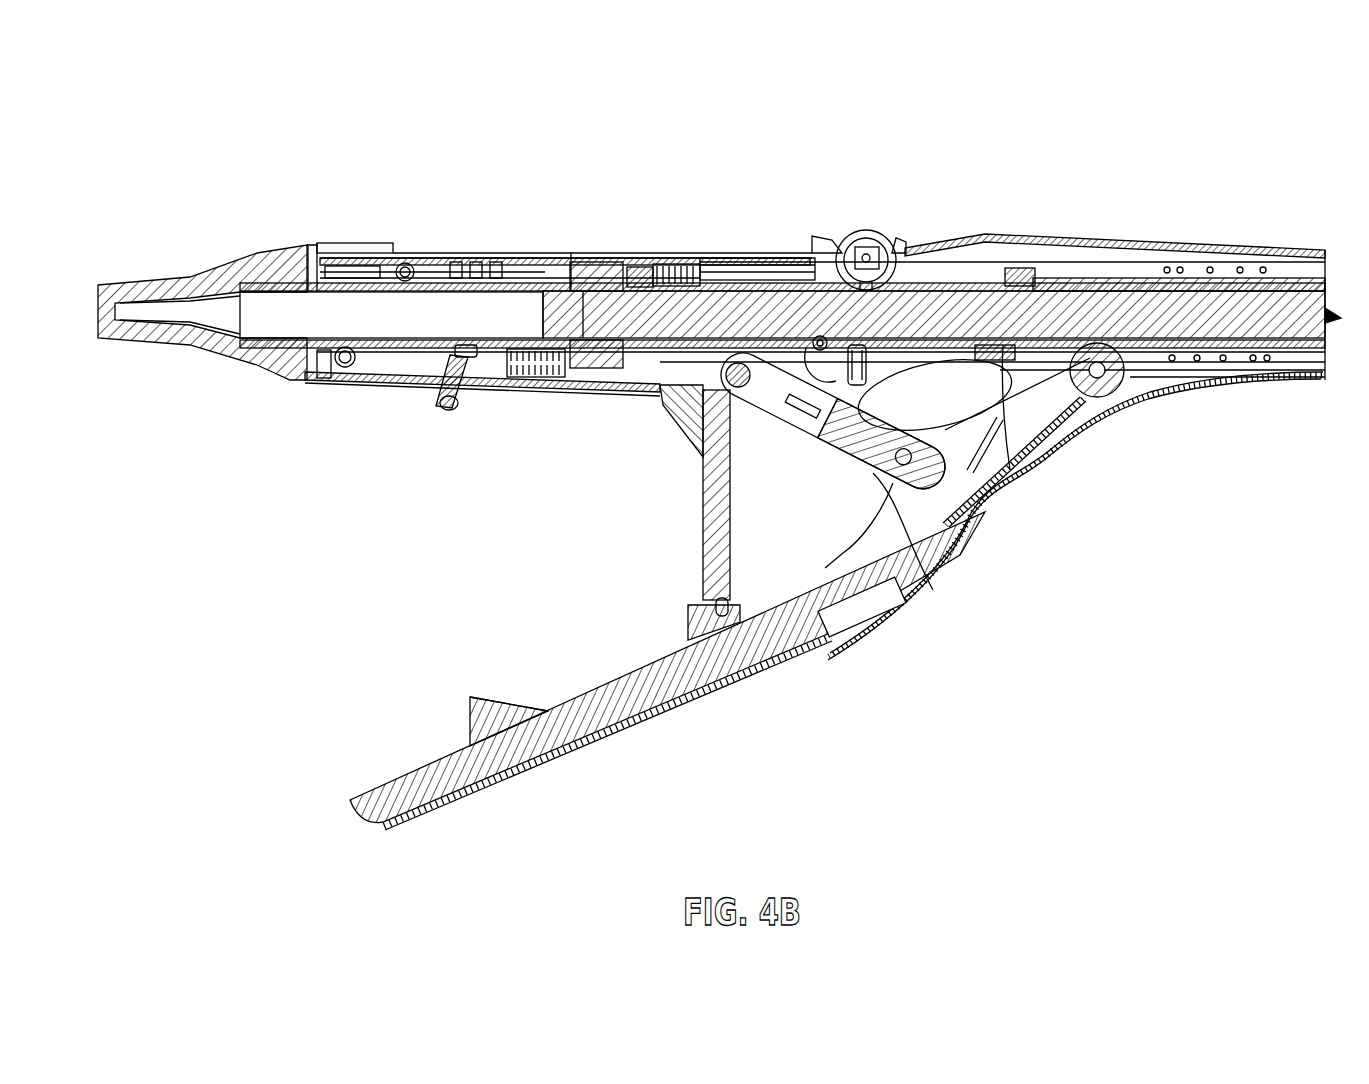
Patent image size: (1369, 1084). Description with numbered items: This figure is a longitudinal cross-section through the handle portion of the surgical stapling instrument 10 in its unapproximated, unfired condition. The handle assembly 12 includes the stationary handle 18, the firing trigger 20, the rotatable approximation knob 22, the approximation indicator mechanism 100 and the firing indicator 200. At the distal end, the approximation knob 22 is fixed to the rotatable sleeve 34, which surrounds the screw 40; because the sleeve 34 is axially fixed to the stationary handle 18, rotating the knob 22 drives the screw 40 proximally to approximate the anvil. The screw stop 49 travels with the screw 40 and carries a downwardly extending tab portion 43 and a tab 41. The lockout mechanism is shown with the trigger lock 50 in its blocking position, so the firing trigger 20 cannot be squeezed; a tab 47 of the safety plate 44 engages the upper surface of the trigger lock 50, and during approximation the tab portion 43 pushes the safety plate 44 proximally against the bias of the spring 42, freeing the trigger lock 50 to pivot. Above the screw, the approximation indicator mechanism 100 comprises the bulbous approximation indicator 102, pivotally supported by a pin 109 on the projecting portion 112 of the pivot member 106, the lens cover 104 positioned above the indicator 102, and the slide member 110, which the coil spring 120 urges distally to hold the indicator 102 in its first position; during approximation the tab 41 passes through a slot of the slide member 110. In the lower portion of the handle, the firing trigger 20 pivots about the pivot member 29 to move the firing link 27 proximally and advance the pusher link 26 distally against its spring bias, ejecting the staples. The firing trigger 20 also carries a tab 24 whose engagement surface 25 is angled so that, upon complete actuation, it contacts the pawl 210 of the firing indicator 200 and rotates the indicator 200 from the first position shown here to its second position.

The surgical stapling instrument 10 is at (626, 144).
The handle assembly 12 is at (428, 208).
The stationary handle 18 is at (368, 242).
The firing trigger 20 is at (505, 785).
The approximation knob 22 is at (175, 278).
The tab 24 is at (470, 700).
The hook surface 25 is at (505, 705).
The pusher link 26 is at (1170, 392).
The firing link 27 is at (935, 590).
The pivot member 29 is at (1100, 372).
The rotatable sleeve 34 is at (382, 352).
The screw 40 is at (571, 253).
The tab 41 is at (1025, 270).
The spring 42 is at (535, 378).
The tab portion 43 is at (1005, 440).
The safety plate 44 is at (612, 380).
The tab 47 is at (672, 405).
The screw stop 49 is at (464, 400).
The trigger lock 50 is at (702, 530).
The approximation indicator mechanism 100 is at (880, 138).
The approximation indicator 102 is at (868, 254).
The lens cover 104 is at (838, 235).
The pivot member 106 is at (840, 258).
The pin 109 is at (898, 242).
The slide member 110 is at (752, 262).
The projecting portion 112 is at (906, 248).
The coil spring 120 is at (668, 262).
The firing indicator 200 is at (452, 428).
The pawl 210 is at (447, 408).